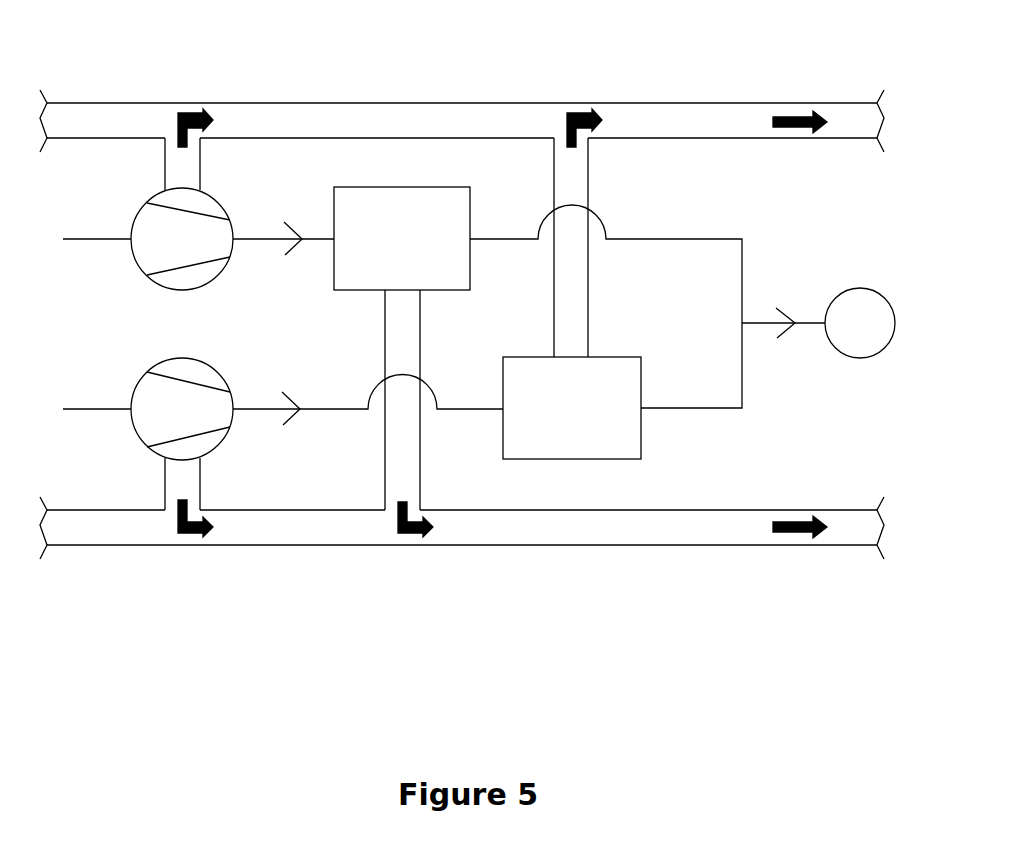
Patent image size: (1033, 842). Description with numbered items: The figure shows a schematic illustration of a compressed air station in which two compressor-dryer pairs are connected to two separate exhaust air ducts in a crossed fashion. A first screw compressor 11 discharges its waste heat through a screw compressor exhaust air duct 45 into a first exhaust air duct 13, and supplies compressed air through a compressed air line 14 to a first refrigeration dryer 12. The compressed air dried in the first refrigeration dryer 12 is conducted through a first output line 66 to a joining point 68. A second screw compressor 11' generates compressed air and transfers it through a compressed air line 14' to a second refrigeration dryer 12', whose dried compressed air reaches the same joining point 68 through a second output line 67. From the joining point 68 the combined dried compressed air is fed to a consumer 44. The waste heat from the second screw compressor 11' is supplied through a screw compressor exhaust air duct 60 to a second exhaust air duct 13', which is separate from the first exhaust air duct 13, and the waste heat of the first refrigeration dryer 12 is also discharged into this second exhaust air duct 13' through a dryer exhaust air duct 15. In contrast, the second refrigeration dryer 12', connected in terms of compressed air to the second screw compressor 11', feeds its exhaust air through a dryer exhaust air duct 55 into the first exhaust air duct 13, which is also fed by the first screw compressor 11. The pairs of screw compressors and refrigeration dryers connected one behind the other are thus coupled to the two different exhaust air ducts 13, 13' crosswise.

The first exhaust air duct 13 is at (462, 83).
The second exhaust air duct 13' is at (462, 564).
The first screw compressor 11 is at (213, 251).
The second screw compressor 11' is at (212, 416).
The first refrigeration dryer 12 is at (423, 218).
The second refrigeration dryer 12' is at (572, 434).
The compressed air line 14 is at (198, 219).
The compressed air line 14' is at (283, 385).
The dryer exhaust air duct 15 is at (405, 335).
The screw compressor exhaust air duct 45 is at (200, 172).
The dryer exhaust air duct 55 is at (578, 172).
The screw compressor exhaust air duct 60 is at (177, 480).
The first output line 66 is at (697, 237).
The second output line 67 is at (690, 410).
The joining point 68 is at (745, 325).
The consumer 44 is at (876, 298).